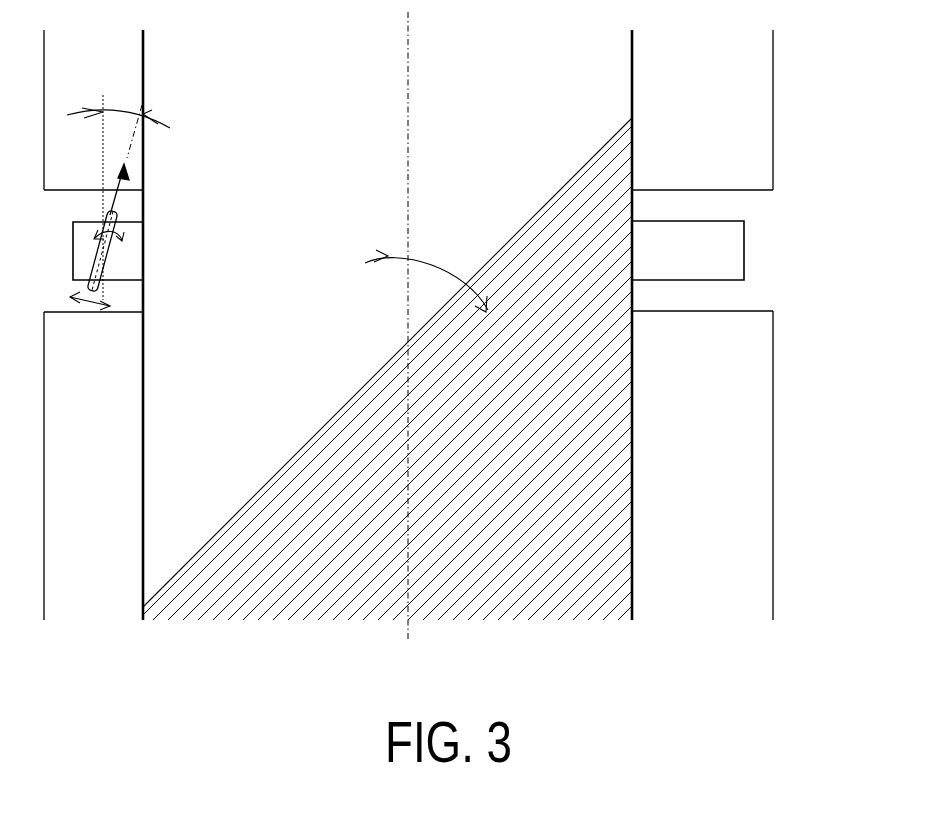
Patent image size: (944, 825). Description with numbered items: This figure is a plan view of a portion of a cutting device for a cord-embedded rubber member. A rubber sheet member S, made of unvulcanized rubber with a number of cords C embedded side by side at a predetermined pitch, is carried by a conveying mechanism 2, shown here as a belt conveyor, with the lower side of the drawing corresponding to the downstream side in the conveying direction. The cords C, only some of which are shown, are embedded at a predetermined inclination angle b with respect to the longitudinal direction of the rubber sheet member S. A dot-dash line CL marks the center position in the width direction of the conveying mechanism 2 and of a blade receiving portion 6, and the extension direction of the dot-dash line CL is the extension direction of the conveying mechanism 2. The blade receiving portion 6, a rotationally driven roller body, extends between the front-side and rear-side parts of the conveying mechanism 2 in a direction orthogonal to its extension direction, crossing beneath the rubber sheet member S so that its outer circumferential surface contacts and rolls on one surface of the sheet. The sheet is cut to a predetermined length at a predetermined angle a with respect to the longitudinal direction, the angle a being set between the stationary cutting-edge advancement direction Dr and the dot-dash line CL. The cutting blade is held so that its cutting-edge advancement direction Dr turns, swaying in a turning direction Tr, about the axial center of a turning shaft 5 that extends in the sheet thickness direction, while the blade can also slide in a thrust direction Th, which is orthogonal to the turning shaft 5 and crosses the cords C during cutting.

The conveying mechanism 2 is at (762, 135).
The turning shaft 5 is at (108, 252).
The blade receiving portion 6 is at (730, 255).
The rubber sheet member S is at (648, 74).
The dot-dash line CL is at (410, 338).
The predetermined angle a is at (118, 120).
The inclination angle b is at (426, 271).
The cords C is at (505, 236).
The cutting-edge advancement direction Dr is at (128, 190).
The turning direction Tr is at (124, 232).
The thrust direction Th is at (82, 310).